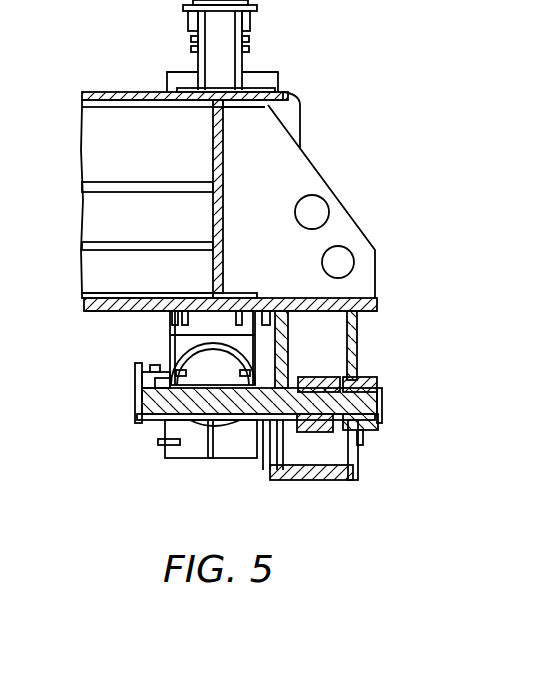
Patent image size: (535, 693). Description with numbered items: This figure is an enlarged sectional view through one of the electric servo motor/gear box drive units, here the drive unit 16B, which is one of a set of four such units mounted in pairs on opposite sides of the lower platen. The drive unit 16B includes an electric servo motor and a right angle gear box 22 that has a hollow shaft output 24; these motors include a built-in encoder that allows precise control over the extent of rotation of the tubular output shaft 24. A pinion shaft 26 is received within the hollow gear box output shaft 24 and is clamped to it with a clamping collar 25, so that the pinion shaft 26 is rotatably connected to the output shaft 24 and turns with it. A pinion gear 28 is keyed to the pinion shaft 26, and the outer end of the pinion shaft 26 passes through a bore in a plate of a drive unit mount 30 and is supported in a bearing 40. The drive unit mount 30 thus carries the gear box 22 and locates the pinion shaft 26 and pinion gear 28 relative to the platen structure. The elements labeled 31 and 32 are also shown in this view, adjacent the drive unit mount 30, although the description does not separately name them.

The drive unit 16B is at (165, 337).
The right angle gear box 22 is at (182, 460).
The hollow shaft output 24 is at (244, 422).
The clamping collar 25 is at (132, 360).
The pinion shaft 26 is at (300, 402).
The pinion gear 28 is at (318, 374).
The drive unit mount 30 is at (370, 327).
The gusset bracket 31 is at (348, 293).
The base plate 32 is at (288, 298).
The bearing 40 is at (367, 437).